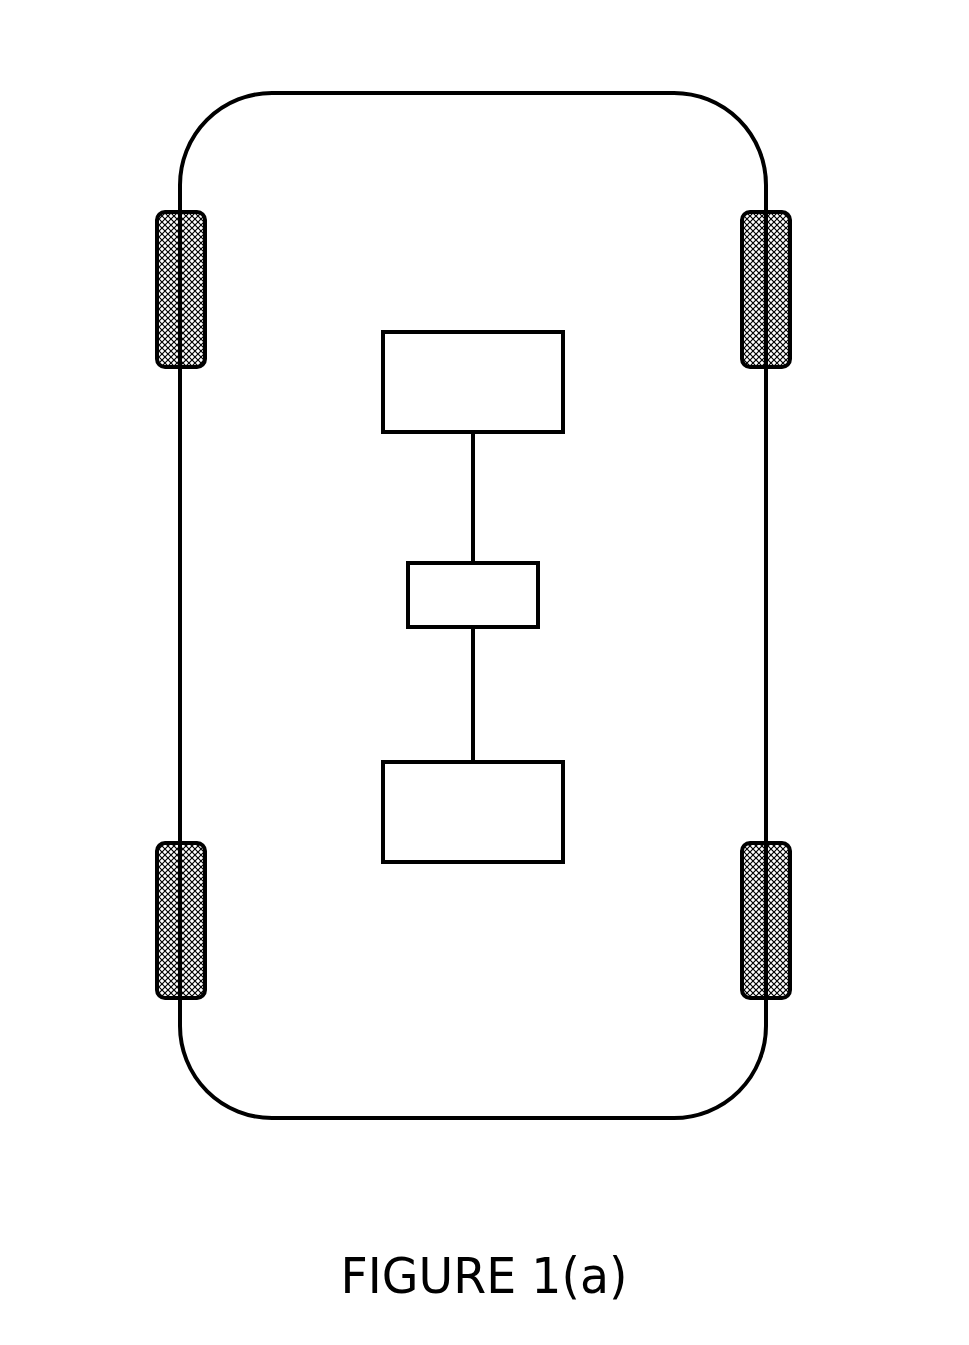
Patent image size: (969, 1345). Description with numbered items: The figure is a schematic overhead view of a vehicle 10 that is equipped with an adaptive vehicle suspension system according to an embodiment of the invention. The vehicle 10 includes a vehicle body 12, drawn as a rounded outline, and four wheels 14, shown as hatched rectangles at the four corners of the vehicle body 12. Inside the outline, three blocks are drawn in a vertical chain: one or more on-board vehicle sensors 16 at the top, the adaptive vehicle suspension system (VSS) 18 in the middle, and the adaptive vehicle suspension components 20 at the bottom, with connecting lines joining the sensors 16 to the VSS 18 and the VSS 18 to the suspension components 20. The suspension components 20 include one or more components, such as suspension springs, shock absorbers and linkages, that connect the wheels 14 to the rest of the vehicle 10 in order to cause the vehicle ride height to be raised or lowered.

The vehicle 10 is at (815, 79).
The vehicle body 12 is at (745, 667).
The wheels 14 is at (157, 292).
The on-board vehicle sensors 16 is at (562, 387).
The adaptive vehicle suspension system (VSS) 18 is at (537, 595).
The adaptive vehicle suspension components 20 is at (562, 812).